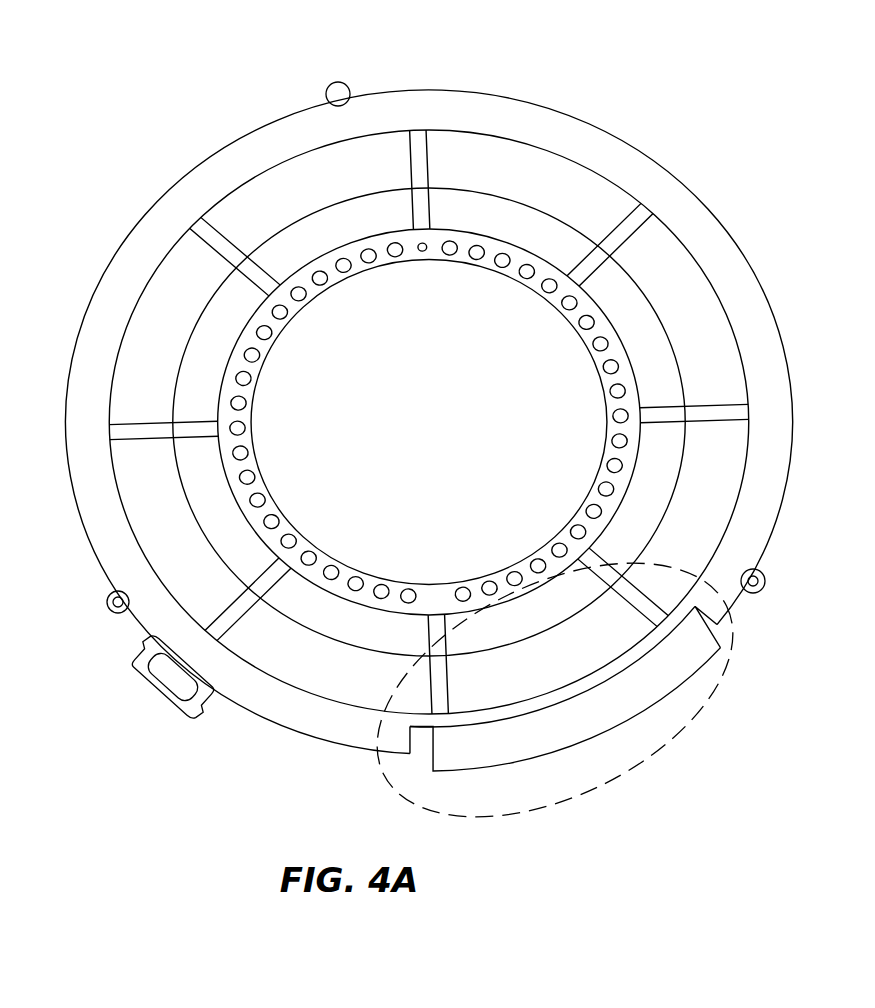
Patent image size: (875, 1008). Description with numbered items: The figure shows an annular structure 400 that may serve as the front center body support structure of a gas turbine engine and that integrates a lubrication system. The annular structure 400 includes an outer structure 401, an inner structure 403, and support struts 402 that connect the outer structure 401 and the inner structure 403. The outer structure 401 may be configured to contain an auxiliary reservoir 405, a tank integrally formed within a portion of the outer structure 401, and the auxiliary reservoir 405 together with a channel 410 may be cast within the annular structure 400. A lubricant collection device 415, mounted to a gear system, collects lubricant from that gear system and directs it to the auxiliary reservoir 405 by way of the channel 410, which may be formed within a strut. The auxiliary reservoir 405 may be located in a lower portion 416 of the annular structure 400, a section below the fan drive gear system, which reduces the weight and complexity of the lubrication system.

The annular structure 400 is at (219, 115).
The outer structure 401 is at (428, 422).
The support struts 402 is at (428, 422).
The inner structure 403 is at (429, 422).
The auxiliary reservoir 405 is at (565, 688).
The channel 410 is at (707, 626).
The lubricant collection device 415 is at (429, 422).
The portion 416 is at (523, 808).